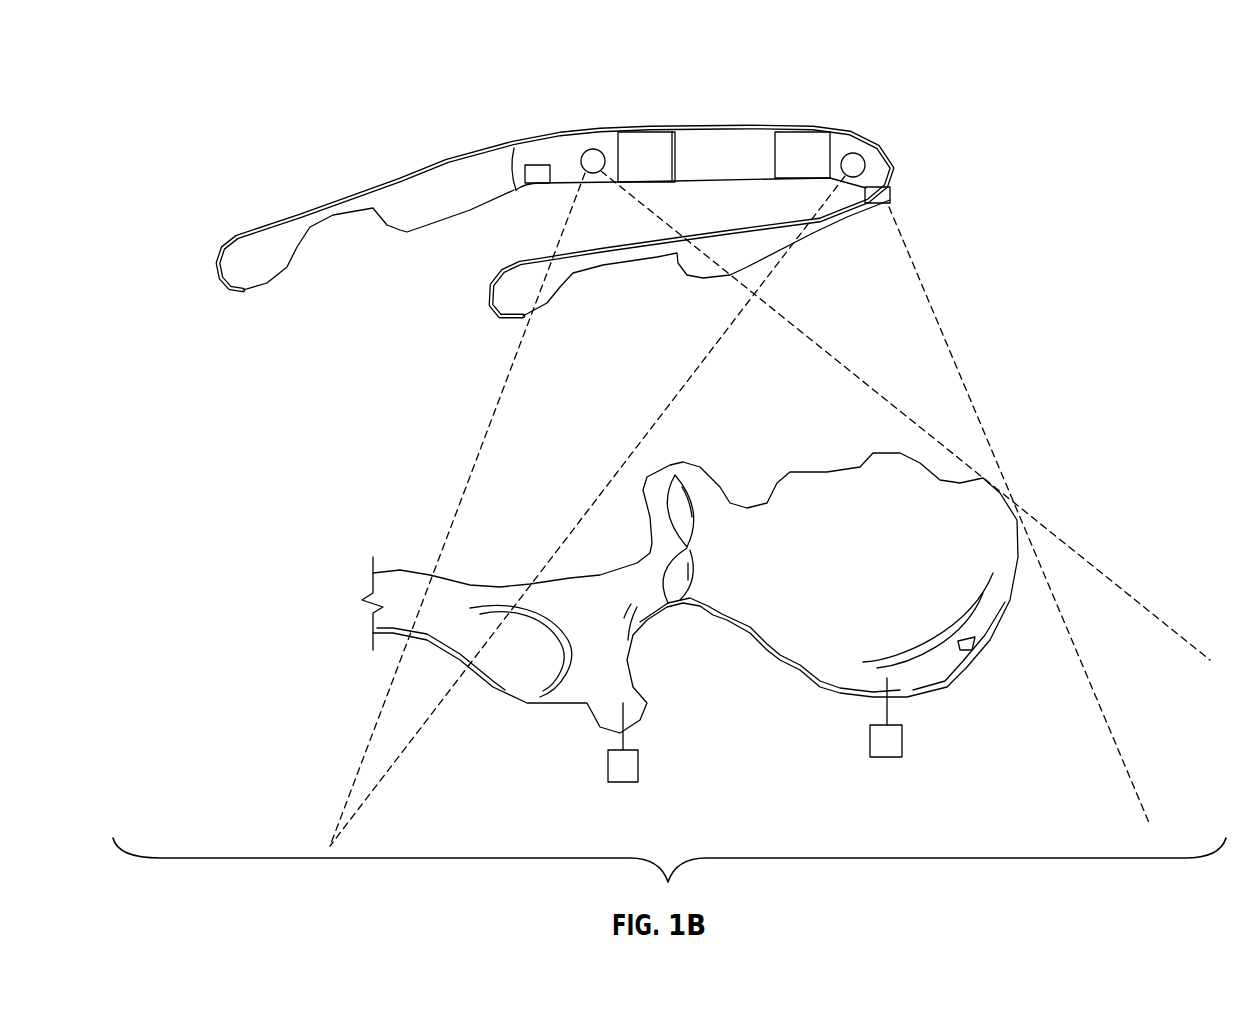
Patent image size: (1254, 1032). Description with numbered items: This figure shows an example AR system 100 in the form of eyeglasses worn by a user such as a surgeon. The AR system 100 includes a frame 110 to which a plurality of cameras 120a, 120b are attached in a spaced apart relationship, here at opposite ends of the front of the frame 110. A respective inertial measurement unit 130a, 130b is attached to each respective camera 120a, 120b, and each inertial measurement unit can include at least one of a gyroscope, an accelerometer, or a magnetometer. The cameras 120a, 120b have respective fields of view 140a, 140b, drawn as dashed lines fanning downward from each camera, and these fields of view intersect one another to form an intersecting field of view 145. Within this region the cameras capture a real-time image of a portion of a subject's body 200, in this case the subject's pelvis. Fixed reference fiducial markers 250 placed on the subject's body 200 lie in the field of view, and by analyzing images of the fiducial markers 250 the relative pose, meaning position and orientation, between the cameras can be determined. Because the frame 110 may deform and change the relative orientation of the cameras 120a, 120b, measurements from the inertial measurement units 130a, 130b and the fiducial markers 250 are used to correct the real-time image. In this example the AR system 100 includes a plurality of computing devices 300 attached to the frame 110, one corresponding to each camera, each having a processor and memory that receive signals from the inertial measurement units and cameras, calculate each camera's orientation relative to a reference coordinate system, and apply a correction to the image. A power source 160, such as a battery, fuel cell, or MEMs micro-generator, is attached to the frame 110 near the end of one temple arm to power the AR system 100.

The AR system 100 is at (665, 431).
The frame 110 is at (251, 262).
The camera 120a is at (592, 149).
The camera 120b is at (861, 156).
The inertial measurement unit 130a is at (535, 179).
The inertial measurement unit 130b is at (891, 197).
The field of view 140a is at (620, 362).
The field of view 140b is at (880, 317).
The intersecting field of view 145 is at (779, 411).
The power source 160 is at (218, 247).
The subject's body 200 is at (835, 607).
The fiducial marker 250 is at (606, 765).
The computing device 300 is at (415, 207).